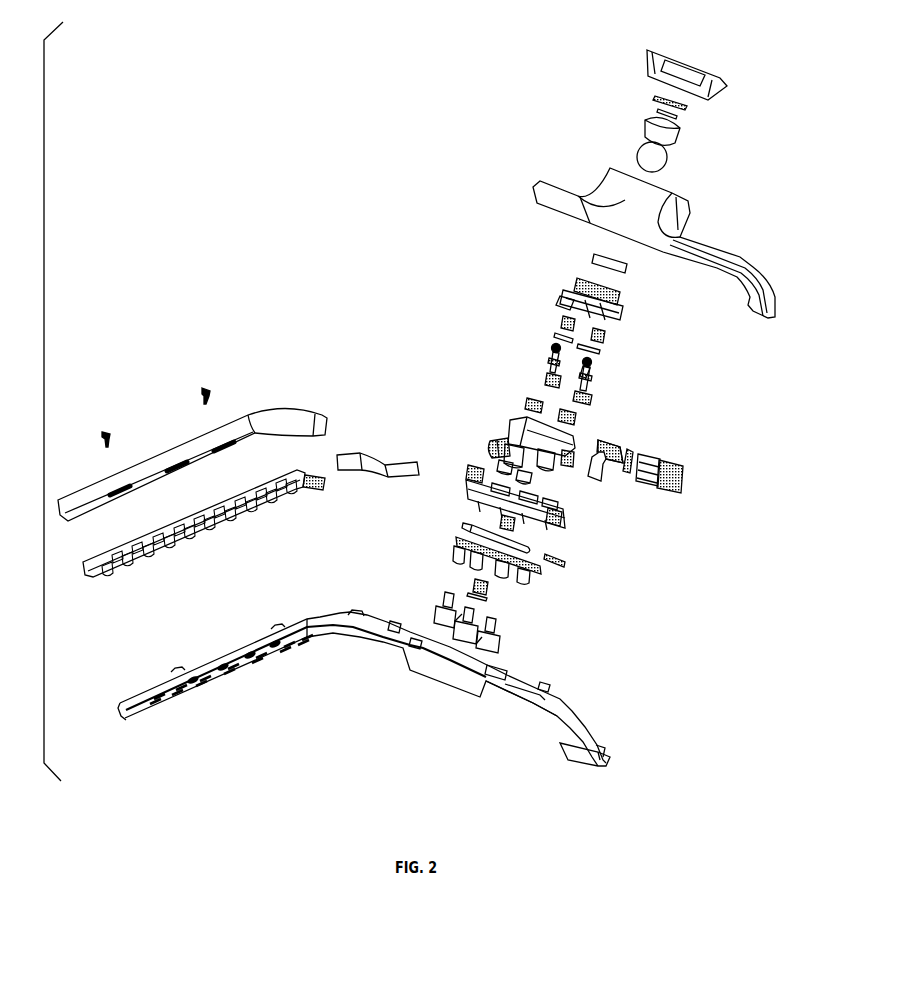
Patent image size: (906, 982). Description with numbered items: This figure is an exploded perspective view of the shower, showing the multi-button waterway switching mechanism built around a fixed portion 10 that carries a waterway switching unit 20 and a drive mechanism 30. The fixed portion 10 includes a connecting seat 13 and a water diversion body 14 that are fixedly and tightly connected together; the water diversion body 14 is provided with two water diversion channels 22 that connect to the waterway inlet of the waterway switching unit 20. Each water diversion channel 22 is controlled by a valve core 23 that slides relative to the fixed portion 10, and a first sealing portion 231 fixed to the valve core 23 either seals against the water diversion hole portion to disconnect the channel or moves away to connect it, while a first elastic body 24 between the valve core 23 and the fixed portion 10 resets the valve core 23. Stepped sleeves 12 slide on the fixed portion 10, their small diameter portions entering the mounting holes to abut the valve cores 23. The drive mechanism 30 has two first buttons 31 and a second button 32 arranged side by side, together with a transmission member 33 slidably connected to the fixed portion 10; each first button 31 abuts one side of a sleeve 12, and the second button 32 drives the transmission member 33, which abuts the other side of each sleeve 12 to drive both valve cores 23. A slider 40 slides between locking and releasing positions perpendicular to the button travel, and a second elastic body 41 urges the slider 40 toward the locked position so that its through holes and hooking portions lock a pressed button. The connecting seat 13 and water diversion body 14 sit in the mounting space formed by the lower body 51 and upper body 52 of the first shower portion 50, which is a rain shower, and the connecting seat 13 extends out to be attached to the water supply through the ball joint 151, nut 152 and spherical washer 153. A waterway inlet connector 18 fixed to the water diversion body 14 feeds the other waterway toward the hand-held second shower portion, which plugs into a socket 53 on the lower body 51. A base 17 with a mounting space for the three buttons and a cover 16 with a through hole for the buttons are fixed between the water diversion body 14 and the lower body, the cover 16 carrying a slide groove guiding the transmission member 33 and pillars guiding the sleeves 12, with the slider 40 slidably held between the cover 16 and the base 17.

The fixed portion 10 is at (512, 422).
The sleeve 12 is at (500, 462).
The connecting seat 13 is at (580, 281).
The water diversion body 14 is at (508, 439).
The cover 16 is at (487, 493).
The base 17 is at (528, 576).
The waterway inlet connector 18 is at (622, 450).
The waterway switching unit 20 is at (558, 293).
The water diversion channel 22 is at (572, 460).
The valve core 23 is at (589, 372).
The first sealing portion 231 is at (587, 376).
The first elastic body 24 is at (603, 337).
The drive mechanism 30 is at (475, 633).
The first button 31 is at (437, 613).
The second button 32 is at (468, 630).
The transmission member 33 is at (524, 494).
The slider 40 is at (470, 530).
The second elastic body 41 is at (563, 568).
The first shower portion 50 is at (217, 698).
The lower body 51 is at (515, 688).
The upper body 52 is at (620, 182).
The socket 53 is at (577, 745).
The ball joint 151 is at (655, 130).
The nut 152 is at (653, 72).
The spherical washer 153 is at (655, 97).